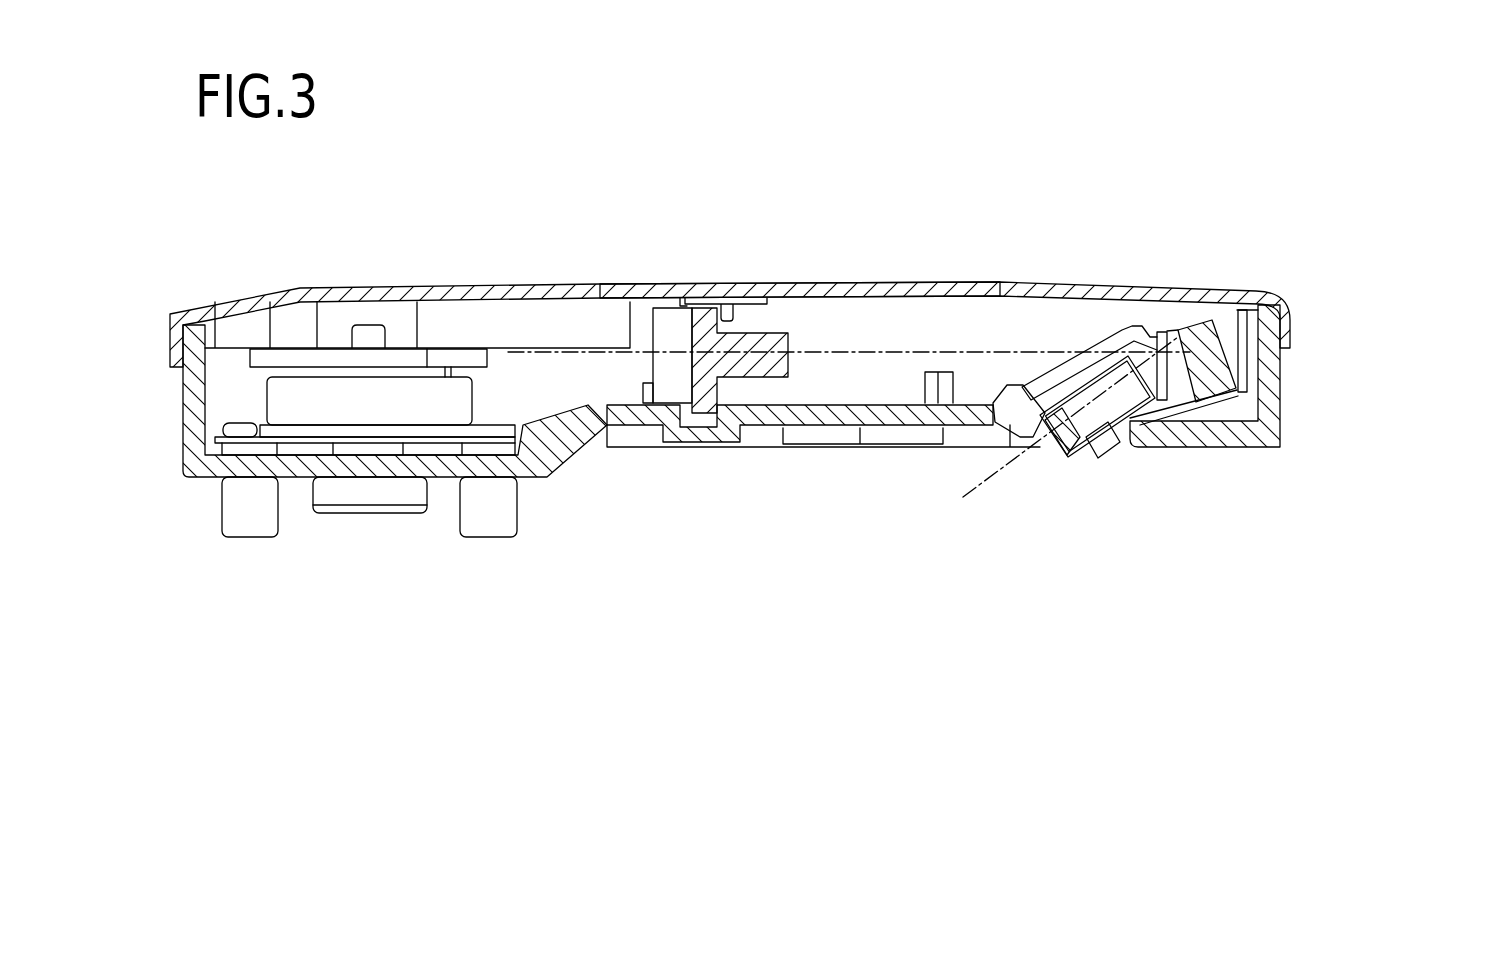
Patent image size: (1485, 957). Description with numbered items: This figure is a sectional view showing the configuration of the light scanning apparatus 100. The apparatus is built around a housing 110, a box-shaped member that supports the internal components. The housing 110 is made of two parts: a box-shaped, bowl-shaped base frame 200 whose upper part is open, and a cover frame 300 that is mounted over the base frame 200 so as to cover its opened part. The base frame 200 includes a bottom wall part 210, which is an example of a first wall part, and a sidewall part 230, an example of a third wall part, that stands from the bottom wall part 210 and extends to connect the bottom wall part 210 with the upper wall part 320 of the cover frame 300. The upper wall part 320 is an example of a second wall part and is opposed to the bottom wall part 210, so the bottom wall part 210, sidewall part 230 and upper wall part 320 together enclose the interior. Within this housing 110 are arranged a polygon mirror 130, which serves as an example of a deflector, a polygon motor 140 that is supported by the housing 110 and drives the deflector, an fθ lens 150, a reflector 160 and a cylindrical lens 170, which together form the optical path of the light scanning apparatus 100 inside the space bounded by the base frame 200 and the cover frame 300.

The light scanning apparatus 100 is at (1063, 182).
The housing 110 is at (1390, 334).
The polygon mirror 130 is at (285, 352).
The polygon motor 140 is at (478, 393).
The fθ lens 150 is at (662, 306).
The reflector 160 is at (1192, 333).
The cylindrical lens 170 is at (1113, 432).
The base frame 200 is at (1284, 398).
The bottom wall part 210 is at (842, 416).
The sidewall part 230 is at (192, 413).
The cover frame 300 is at (1294, 342).
The upper wall part 320 is at (934, 288).